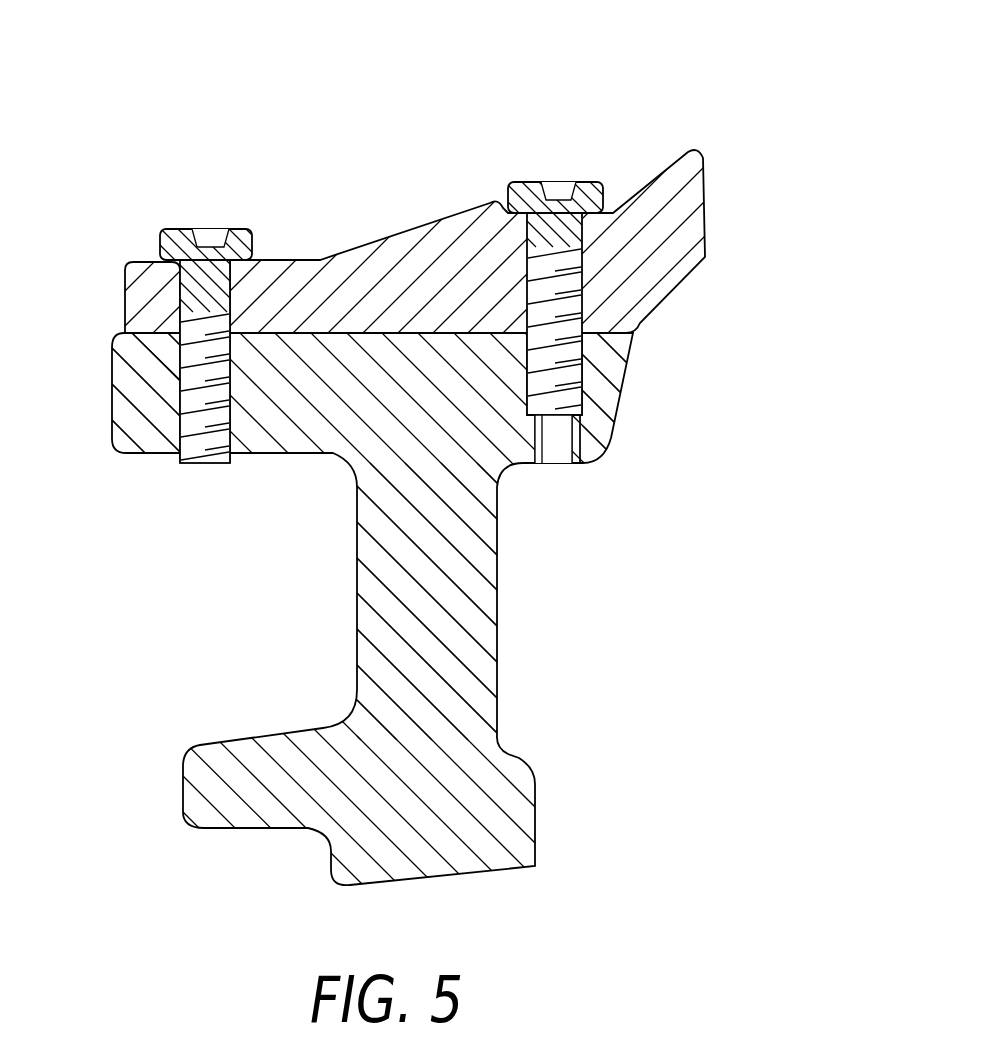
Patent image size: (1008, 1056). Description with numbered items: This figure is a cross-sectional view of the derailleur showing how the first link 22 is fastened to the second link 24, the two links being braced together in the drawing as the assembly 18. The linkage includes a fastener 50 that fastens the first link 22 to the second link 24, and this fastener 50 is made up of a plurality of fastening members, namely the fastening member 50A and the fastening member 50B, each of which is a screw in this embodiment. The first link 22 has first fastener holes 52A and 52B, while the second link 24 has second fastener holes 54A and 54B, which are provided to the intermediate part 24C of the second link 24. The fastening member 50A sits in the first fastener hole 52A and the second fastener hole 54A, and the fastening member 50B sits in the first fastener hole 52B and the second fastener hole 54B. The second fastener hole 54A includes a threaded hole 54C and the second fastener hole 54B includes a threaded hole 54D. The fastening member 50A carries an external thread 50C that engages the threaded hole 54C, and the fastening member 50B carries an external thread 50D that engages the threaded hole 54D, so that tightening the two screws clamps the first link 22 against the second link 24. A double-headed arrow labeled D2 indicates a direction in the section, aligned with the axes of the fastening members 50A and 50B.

The mounting structure 18 is at (413, 516).
The first link 22 is at (503, 338).
The second link 24 is at (371, 609).
The intermediate part 24C is at (408, 572).
The fastener 50 is at (381, 247).
The fastening member 50A is at (241, 267).
The fastening member 50B is at (505, 267).
The external thread 50C is at (233, 364).
The external thread 50D is at (505, 338).
The first fastener hole 52A is at (125, 273).
The first fastener hole 52B is at (587, 250).
The second fastener hole 54A is at (177, 407).
The second fastener hole 54B is at (612, 442).
The threaded hole 54C is at (203, 368).
The threaded hole 54D is at (533, 401).
The vertical direction D2 is at (622, 20).